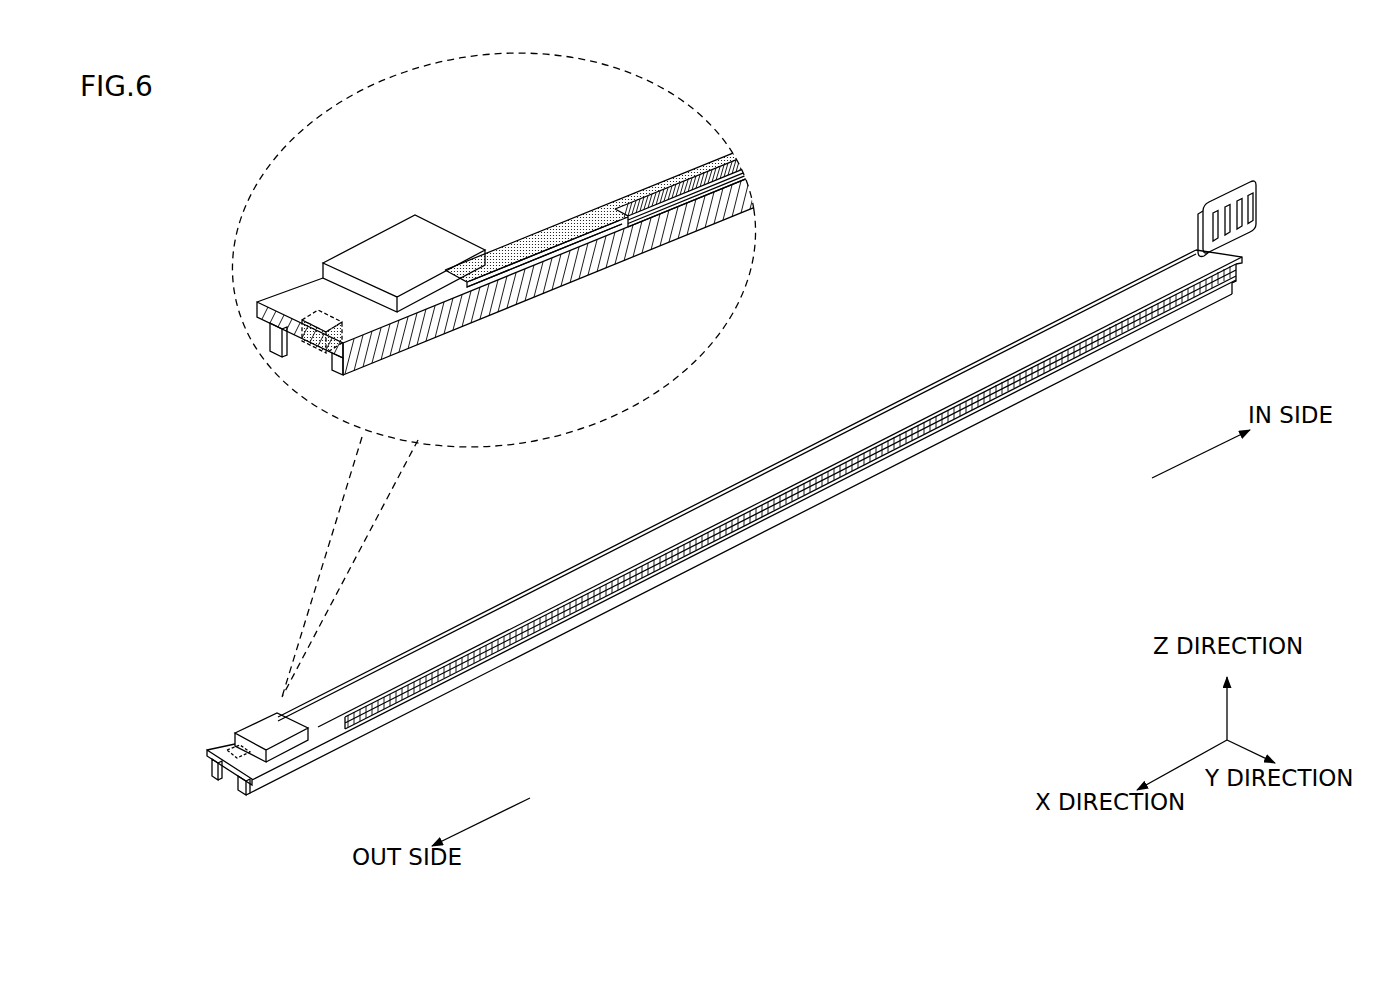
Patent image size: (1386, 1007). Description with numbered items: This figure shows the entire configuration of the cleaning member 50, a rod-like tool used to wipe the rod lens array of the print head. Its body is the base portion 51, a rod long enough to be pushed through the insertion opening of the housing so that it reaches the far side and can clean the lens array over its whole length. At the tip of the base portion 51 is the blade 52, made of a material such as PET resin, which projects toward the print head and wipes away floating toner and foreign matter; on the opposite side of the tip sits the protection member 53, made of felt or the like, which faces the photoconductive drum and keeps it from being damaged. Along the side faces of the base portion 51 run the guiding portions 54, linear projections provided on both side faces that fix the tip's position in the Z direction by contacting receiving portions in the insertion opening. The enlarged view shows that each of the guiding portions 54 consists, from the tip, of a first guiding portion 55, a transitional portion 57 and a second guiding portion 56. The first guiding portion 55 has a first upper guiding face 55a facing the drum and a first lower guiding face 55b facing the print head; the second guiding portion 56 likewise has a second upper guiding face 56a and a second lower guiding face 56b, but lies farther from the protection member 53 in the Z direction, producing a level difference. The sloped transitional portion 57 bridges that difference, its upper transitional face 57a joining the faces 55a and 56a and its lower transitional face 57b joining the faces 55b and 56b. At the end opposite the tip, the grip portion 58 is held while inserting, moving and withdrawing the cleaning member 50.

The cleaning member 50 is at (818, 592).
The base portion 51 is at (910, 410).
The blade 52 is at (224, 748).
The protection member 53 is at (264, 732).
The guiding portions 54 is at (191, 769).
The first guiding portion 55 is at (303, 763).
The first upper guiding face 55a is at (461, 289).
The first lower guiding face 55b is at (473, 315).
The second guiding portion 56 is at (446, 688).
The second upper guiding face 56a is at (703, 170).
The second lower guiding face 56b is at (714, 200).
The transitional portion 57 is at (351, 734).
The upper transitional face 57a is at (528, 253).
The lower transitional face 57b is at (614, 246).
The grip portion 58 is at (1224, 196).